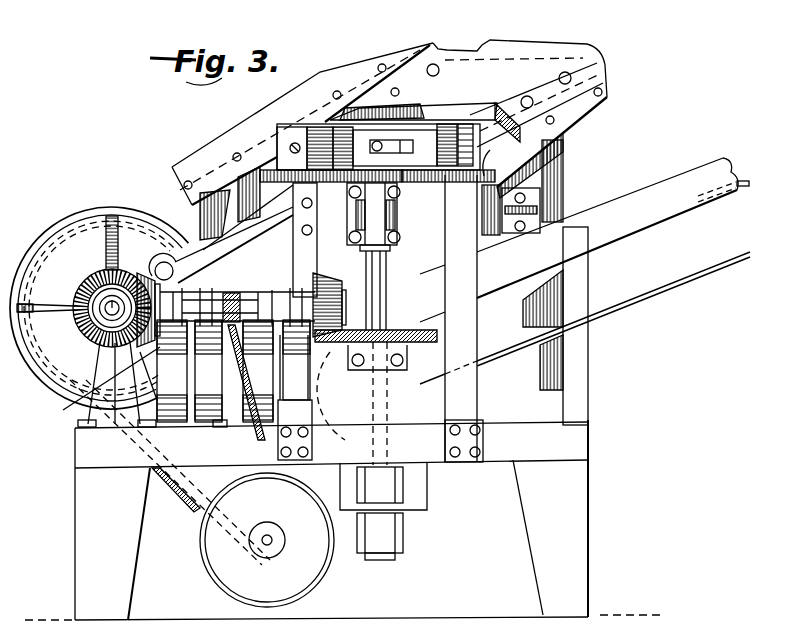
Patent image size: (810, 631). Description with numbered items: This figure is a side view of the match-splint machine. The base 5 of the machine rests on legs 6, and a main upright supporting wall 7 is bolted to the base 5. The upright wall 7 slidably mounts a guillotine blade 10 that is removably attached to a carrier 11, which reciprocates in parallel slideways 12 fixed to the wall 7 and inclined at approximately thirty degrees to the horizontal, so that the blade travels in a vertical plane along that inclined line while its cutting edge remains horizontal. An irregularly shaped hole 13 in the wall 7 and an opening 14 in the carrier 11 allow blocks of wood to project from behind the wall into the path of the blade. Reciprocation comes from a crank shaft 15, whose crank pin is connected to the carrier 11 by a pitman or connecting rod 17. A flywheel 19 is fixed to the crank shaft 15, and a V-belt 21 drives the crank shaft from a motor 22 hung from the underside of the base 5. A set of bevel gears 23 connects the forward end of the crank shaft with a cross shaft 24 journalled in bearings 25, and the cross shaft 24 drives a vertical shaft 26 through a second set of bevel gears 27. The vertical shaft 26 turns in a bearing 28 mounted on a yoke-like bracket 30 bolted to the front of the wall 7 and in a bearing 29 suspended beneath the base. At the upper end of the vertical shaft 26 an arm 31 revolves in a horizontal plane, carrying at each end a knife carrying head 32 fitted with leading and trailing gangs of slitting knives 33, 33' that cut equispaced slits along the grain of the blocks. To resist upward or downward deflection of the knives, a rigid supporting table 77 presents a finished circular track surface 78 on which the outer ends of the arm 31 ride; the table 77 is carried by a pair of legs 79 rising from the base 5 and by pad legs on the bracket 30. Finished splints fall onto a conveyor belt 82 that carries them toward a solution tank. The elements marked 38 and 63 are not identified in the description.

The base 5 is at (582, 446).
The legs 6 is at (75, 530).
The main upright supporting wall 7 is at (565, 160).
The guillotine blade 10 is at (565, 44).
The carrier 11 is at (450, 56).
The slideways 12 is at (371, 70).
The irregularly shaped hole 13 is at (345, 124).
The opening 14 is at (488, 108).
The crank shaft 15 is at (90, 300).
The pitman or connecting rod 17 is at (202, 240).
The flywheel 19 is at (58, 225).
The V-belt 21 is at (186, 493).
The motor 22 is at (308, 576).
The set of bevel gears 23 is at (92, 403).
The cross shaft 24 is at (396, 270).
The bearings 25 is at (232, 292).
The vertical shaft 26 is at (395, 562).
The set of bevel gears 27 is at (327, 348).
The bearing 28 is at (400, 235).
The bearing 29 is at (407, 528).
The yoke-like bracket 30 is at (540, 190).
The arm 31 is at (385, 142).
The knife carrying head 32 is at (292, 130).
The slitting knives 33 is at (376, 110).
The slitting knives 33' is at (279, 129).
The connecting rod 38 is at (236, 350).
The wheel rim spoke 63 is at (95, 212).
The supporting table 77 is at (260, 176).
The circular track surface 78 is at (495, 170).
The legs 79 is at (277, 442).
The conveyor belt 82 is at (672, 292).